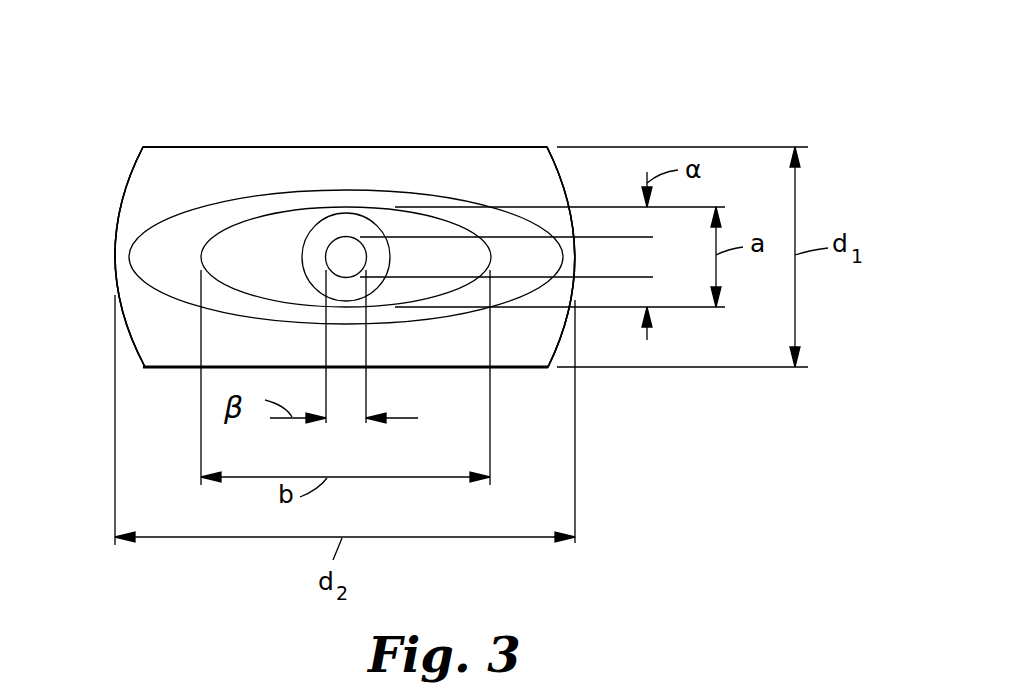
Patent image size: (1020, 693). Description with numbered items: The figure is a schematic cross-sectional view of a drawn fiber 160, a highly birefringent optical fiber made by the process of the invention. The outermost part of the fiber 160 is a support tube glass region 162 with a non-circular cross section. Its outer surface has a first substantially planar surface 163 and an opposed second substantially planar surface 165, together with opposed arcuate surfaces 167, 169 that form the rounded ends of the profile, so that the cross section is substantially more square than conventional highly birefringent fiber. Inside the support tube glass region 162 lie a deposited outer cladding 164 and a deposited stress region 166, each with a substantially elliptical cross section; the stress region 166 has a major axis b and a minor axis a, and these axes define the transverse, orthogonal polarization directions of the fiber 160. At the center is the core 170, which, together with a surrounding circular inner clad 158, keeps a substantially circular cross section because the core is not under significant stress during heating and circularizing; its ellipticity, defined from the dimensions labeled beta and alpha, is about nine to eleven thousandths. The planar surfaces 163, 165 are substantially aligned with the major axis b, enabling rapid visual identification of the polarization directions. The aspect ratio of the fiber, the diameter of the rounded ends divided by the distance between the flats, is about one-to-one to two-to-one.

The drawn fiber 160 is at (645, 51).
The support tube glass region 162 is at (505, 138).
The first substantially planar surface 163 is at (433, 146).
The second substantially planar surface 165 is at (520, 368).
The arcuate surface 167 is at (133, 170).
The arcuate surface 169 is at (560, 172).
The outer cladding 164 is at (145, 253).
The stress region 166 is at (228, 242).
The inner cladding 158 is at (323, 228).
The core 170 is at (347, 245).